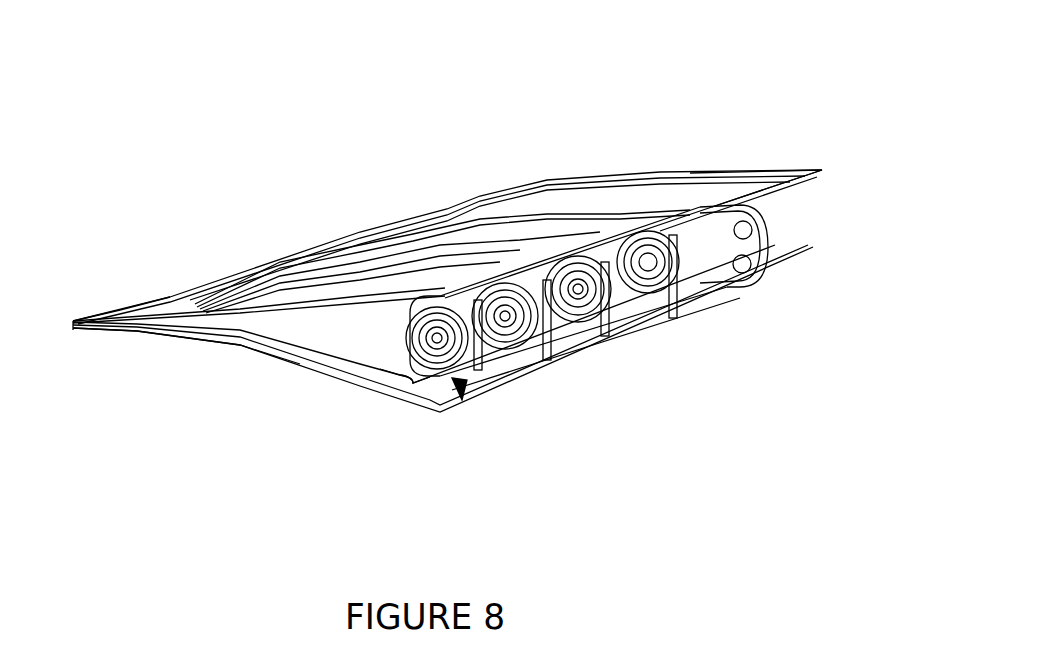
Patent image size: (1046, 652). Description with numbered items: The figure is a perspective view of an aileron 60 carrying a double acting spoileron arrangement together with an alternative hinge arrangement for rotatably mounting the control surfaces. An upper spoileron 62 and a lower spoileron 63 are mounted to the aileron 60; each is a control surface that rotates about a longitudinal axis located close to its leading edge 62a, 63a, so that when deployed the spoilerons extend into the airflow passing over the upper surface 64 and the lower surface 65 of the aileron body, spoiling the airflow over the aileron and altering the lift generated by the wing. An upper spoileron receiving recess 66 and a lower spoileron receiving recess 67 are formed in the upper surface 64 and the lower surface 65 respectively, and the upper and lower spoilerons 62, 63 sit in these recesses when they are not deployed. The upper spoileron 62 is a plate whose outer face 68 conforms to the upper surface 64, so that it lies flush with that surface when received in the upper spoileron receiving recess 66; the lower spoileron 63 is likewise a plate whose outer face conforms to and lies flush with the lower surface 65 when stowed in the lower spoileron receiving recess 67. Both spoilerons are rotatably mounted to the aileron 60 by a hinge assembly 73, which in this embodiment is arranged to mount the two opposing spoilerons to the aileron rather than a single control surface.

The aileron 60 is at (609, 122).
The upper spoileron 62 is at (377, 277).
The leading edge of upper spoileron 62a is at (627, 223).
The lower spoileron 63 is at (358, 345).
The leading edge of lower spoileron 63a is at (562, 335).
The upper surface 64 is at (175, 303).
The lower surface 65 is at (187, 340).
The upper spoileron receiving recess 66 is at (522, 220).
The lower spoileron receiving recess 67 is at (400, 378).
The outer face 68 is at (438, 240).
The hinge assembly 73 is at (467, 397).